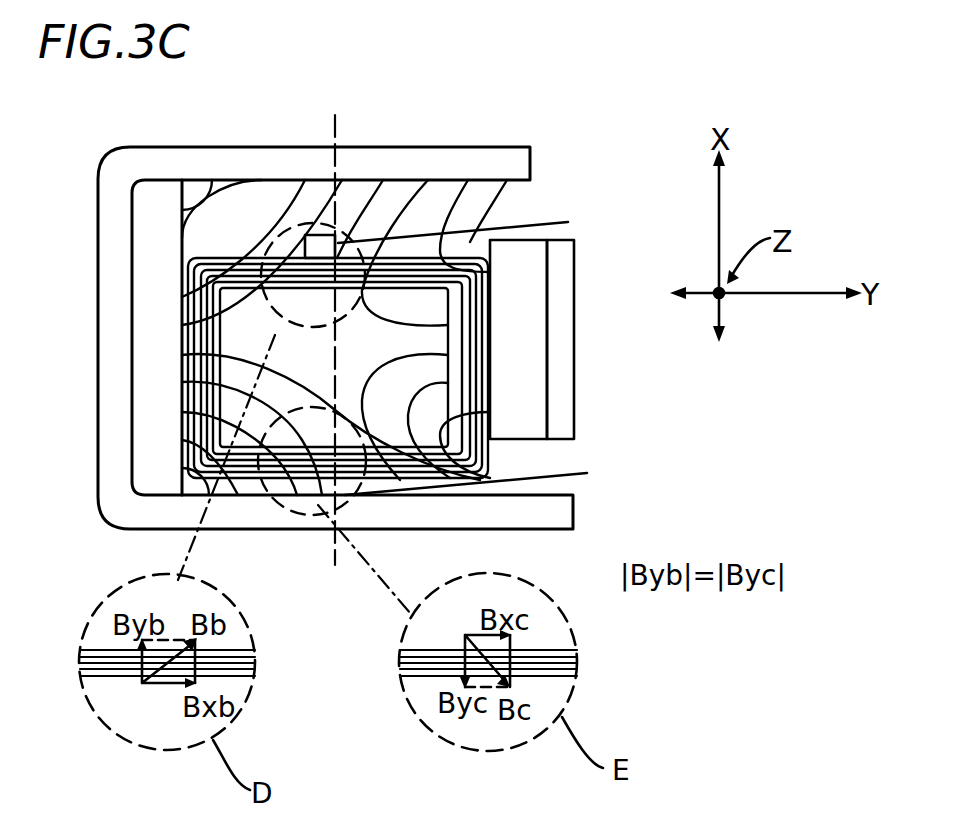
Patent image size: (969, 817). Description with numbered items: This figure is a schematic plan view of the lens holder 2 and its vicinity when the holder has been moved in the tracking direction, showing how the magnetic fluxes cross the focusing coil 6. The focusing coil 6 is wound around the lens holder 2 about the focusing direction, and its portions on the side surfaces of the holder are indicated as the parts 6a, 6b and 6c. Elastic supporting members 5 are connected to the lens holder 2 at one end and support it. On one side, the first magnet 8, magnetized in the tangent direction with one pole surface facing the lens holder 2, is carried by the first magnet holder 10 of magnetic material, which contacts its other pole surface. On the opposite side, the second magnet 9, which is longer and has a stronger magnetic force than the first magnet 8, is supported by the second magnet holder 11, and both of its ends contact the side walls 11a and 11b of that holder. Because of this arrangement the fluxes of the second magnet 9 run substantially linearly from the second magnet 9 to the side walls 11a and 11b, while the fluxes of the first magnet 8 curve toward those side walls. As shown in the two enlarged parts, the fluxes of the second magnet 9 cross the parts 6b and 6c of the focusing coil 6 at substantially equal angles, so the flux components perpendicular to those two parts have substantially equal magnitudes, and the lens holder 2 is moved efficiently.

The lens holder 2 is at (250, 332).
The elastic supporting members 5 is at (568, 222).
The focusing coil 6 is at (195, 428).
The part of the focusing coil 6a is at (140, 356).
The part of the focusing coil 6b is at (390, 280).
The part of the focusing coil 6c is at (420, 488).
The first magnet 8 is at (520, 292).
The second magnet 9 is at (153, 282).
The first magnet holder 10 is at (565, 322).
The second magnet holder 11 is at (100, 152).
The side wall of the second magnet holder 11a is at (276, 162).
The side wall of the second magnet holder 11b is at (272, 518).